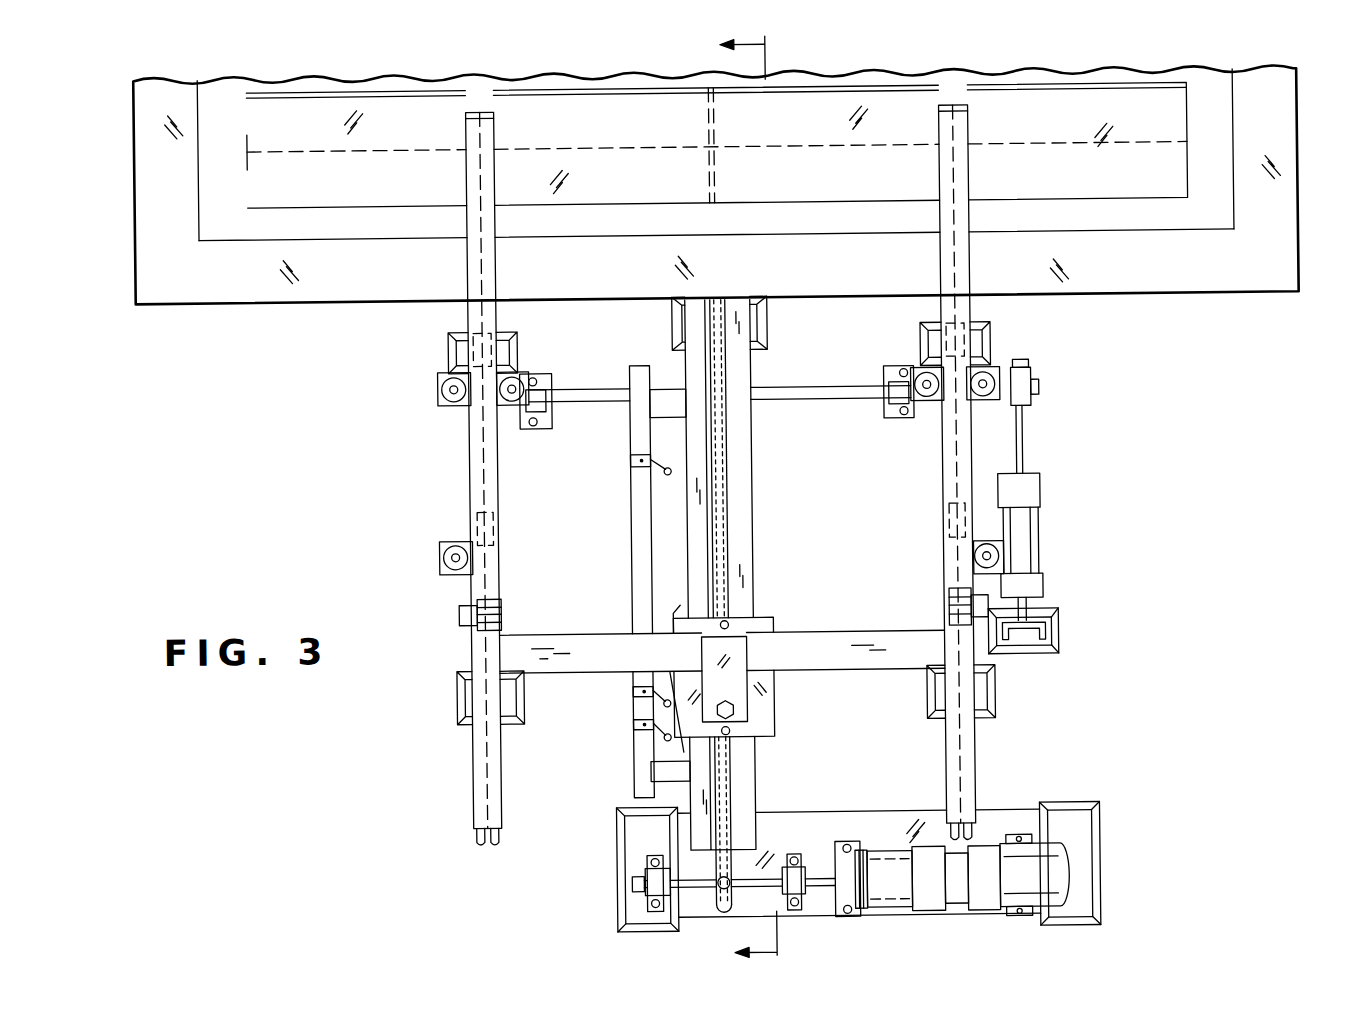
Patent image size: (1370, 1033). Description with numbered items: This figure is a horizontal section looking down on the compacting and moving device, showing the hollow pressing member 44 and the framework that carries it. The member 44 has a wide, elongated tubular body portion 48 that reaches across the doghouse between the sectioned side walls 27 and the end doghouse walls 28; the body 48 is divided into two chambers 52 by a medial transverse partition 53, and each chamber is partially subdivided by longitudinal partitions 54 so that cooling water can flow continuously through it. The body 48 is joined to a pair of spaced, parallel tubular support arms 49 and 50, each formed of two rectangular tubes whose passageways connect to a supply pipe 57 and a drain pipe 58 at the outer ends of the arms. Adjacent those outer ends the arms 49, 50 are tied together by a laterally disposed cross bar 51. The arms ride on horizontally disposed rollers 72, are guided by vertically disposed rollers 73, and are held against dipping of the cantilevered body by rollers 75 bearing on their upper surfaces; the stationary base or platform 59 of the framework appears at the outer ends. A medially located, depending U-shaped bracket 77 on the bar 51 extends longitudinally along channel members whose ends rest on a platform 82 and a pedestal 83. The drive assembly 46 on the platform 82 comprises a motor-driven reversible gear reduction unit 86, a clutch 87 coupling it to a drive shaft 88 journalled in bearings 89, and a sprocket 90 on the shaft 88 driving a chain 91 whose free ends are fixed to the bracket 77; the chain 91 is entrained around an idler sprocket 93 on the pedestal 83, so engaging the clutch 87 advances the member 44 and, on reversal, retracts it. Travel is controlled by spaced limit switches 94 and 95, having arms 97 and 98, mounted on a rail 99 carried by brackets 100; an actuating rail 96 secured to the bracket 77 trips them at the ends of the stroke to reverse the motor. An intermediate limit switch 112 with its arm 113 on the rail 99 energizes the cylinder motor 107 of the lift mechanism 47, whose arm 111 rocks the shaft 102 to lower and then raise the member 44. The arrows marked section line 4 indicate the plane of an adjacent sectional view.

The section line 4- 4 is at (765, 500).
The side wall 27 is at (152, 152).
The end doghouse walls 28 is at (1146, 280).
The hollow pressing member 44 is at (1160, 77).
The drive assembly 46 is at (846, 863).
The crank mechanism 47 is at (1048, 551).
The tubular body portion 48 is at (1184, 134).
The tubular support arm 49 is at (478, 749).
The tubular support arm 50 is at (966, 764).
The cross bar 51 is at (835, 642).
The chambers 52 is at (588, 121).
The transverse partition 53 is at (720, 115).
The longitudinal partitions 54 is at (305, 147).
The supply pipe 57 is at (476, 842).
The drain pipe 58 is at (493, 845).
The stationary base 59 is at (454, 693).
The horizontally disposed rollers 72 is at (472, 342).
The vertically disposed rollers 73 is at (521, 377).
The horizontally disposed rollers 75 is at (492, 600).
The U-shaped bracket 77 is at (762, 691).
The platform 82 is at (873, 825).
The pedestal 83 is at (680, 323).
The gear reduction unit 86 is at (934, 905).
The clutch 87 is at (862, 895).
The drive shaft 88 is at (678, 881).
The bearings 89 is at (795, 870).
The sprocket 90 is at (720, 900).
The chain 91 is at (722, 464).
The idler sprocket 93 is at (719, 308).
The limit switch 94 is at (631, 724).
The limit switch 95 is at (636, 462).
The actuating rail 96 is at (671, 606).
The arm 97 is at (662, 738).
The arm 98 is at (664, 475).
The rail 99 is at (640, 491).
The brackets 100 is at (668, 408).
The rockable shaft 102 is at (858, 402).
The motor 107 is at (1042, 521).
The arm 111 is at (1030, 407).
The limit switch 112 is at (631, 690).
The arm 113 is at (661, 703).